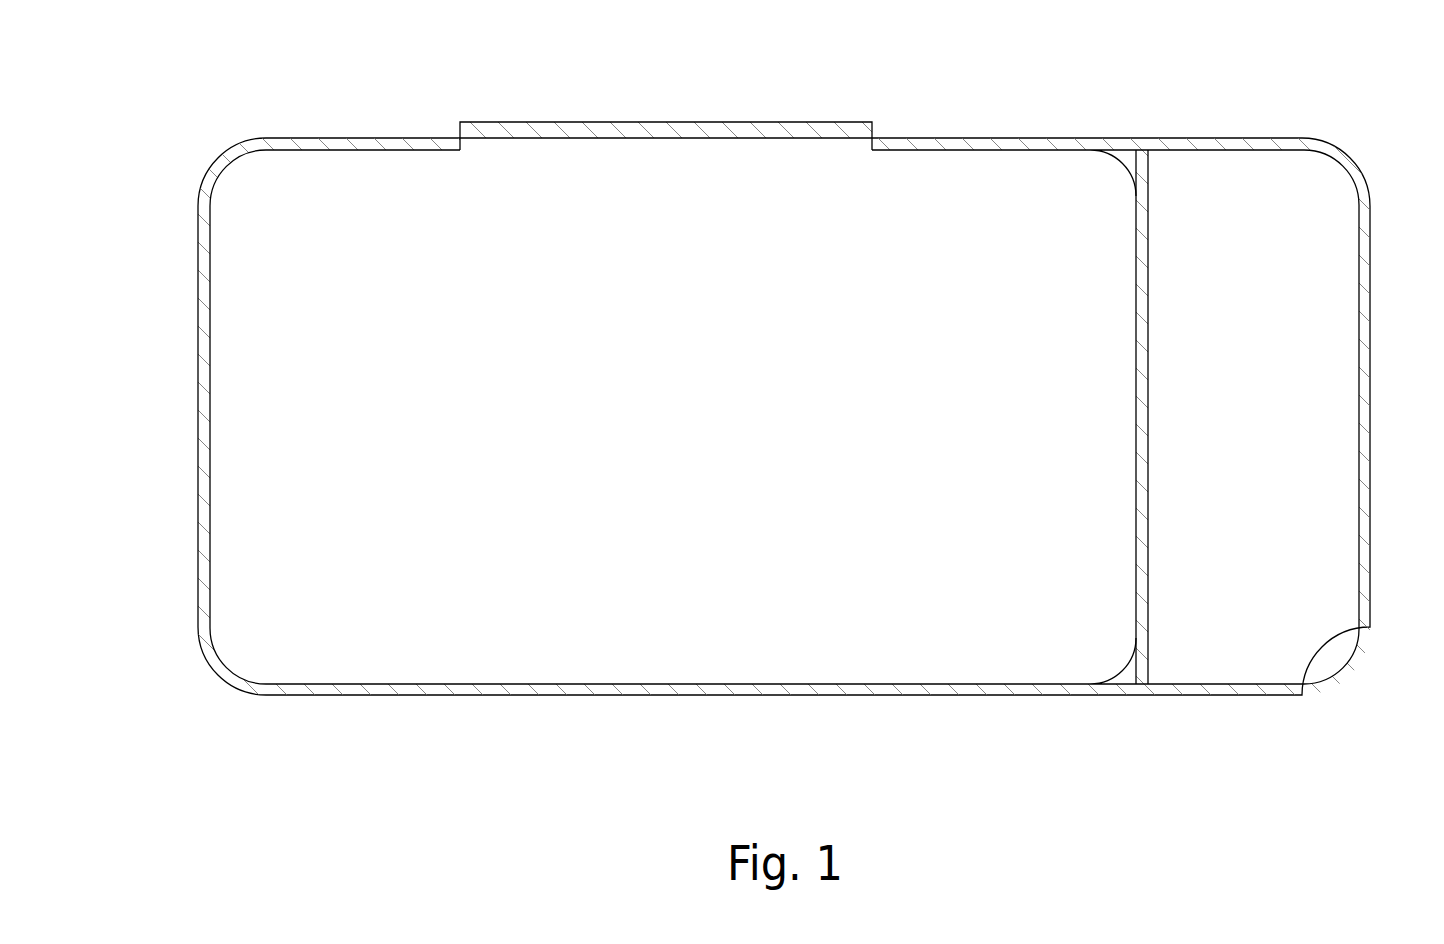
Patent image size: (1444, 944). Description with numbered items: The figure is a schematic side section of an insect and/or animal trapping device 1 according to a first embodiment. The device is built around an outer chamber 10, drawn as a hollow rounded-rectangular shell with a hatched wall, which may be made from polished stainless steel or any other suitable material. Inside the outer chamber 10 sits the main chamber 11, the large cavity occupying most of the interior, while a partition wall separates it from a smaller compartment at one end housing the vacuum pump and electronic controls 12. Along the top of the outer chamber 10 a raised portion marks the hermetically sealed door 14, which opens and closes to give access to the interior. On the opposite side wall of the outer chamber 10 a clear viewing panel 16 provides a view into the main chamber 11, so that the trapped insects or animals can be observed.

The electronic device 1 is at (748, 696).
The outer chamber 10 is at (265, 692).
The main chamber 11 is at (690, 428).
The vacuum pump and electronic controls 12 is at (1330, 280).
The hermetically sealed door 14 is at (643, 121).
The clear viewing panel 16 is at (198, 344).